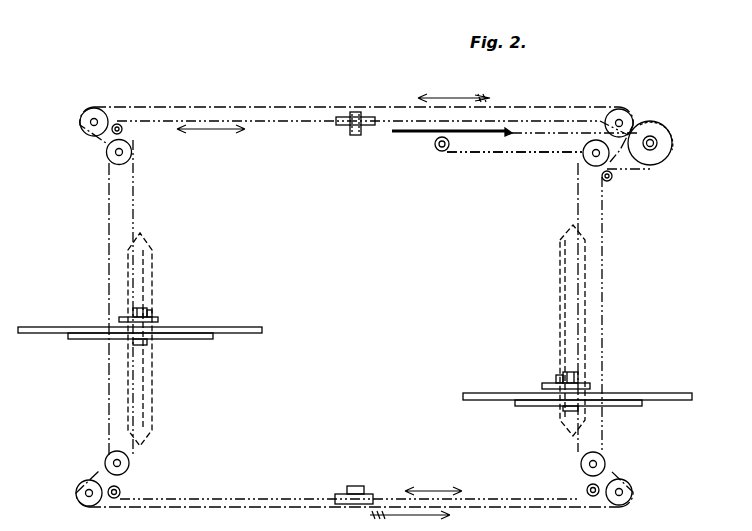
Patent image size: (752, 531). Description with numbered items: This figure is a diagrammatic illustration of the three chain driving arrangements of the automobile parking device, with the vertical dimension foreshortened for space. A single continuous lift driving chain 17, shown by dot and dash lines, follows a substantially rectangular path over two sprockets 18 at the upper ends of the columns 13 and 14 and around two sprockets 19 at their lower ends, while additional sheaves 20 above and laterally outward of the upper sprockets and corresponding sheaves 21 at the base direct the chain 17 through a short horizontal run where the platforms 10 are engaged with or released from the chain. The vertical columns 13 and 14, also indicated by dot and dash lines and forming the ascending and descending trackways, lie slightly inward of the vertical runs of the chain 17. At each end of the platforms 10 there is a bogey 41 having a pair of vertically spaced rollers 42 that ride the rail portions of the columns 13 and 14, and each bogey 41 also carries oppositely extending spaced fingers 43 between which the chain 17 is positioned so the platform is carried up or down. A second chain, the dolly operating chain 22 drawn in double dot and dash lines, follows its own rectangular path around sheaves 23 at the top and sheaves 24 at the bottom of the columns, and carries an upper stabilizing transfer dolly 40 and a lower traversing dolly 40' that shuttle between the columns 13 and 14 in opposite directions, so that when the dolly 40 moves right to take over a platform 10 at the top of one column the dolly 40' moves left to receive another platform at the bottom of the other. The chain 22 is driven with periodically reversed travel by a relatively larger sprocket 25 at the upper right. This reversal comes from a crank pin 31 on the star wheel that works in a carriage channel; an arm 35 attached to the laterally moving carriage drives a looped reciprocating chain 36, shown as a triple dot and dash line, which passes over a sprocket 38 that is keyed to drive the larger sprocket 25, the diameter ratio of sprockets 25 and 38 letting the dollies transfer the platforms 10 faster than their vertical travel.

The automobile supporting platform 10 is at (170, 336).
The column 13 is at (560, 250).
The column 14 is at (143, 258).
The lift driving chain 17 is at (272, 107).
The sprocket 18 is at (107, 150).
The sprocket 19 is at (130, 463).
The sprocket or sheave 20 is at (80, 118).
The sprocket or sheave 21 is at (76, 493).
The dolly operating chain 22 is at (270, 125).
The sheave or sprocket 23 is at (122, 131).
The sheave or sprocket 24 is at (121, 490).
The larger sprocket 25 is at (655, 128).
The crank pin 31 is at (445, 152).
The arm 35 is at (415, 133).
The reciprocating chain 36 is at (520, 155).
The sprocket 38 is at (660, 143).
The stabilizing transfer dolly 40 is at (352, 140).
The traversing and stabilizing dolly 40' is at (376, 486).
The bogey 41 is at (152, 316).
The roller or wheel 42 is at (143, 310).
The finger 43 is at (158, 319).